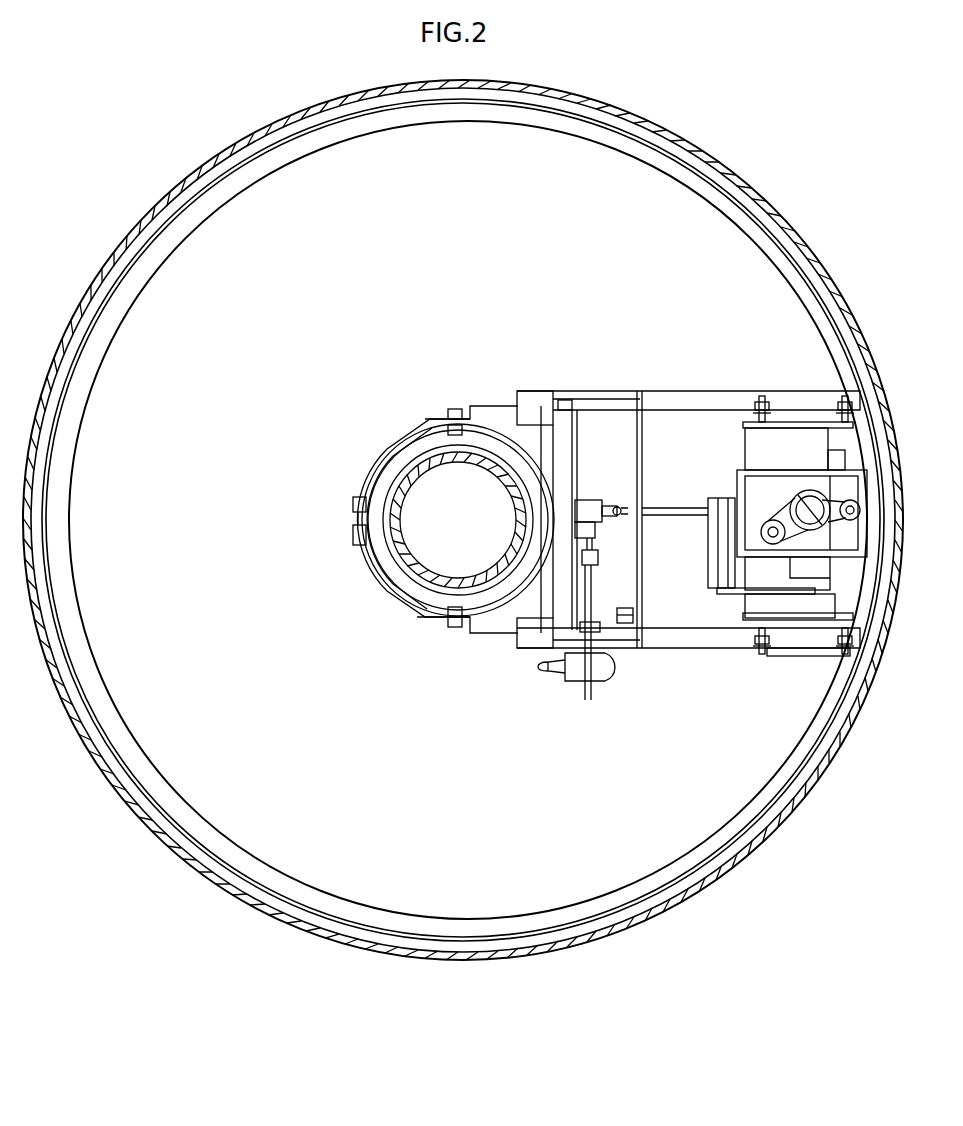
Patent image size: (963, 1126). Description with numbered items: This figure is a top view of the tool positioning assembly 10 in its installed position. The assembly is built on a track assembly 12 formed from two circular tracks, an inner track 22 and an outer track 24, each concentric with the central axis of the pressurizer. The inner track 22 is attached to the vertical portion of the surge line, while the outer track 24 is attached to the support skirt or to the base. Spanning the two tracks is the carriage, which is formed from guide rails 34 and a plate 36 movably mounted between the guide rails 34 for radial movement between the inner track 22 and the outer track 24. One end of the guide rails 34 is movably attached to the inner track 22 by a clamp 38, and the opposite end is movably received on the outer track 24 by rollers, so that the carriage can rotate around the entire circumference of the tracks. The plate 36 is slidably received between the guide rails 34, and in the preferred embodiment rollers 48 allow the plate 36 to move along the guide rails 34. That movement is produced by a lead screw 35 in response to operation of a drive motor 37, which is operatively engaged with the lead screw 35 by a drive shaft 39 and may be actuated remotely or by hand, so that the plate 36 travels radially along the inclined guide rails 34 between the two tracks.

The tool positioning assembly 10 is at (583, 517).
The track assembly 12 is at (445, 127).
The inner track 22 is at (425, 597).
The outer track 24 is at (521, 118).
The guide rails 34 is at (686, 391).
The lead screw 35 is at (686, 510).
The plate 36 is at (745, 432).
The drive motor 37 is at (609, 678).
The clamp 38 is at (372, 472).
The drive shaft 39 is at (592, 600).
The rollers 48 is at (840, 405).